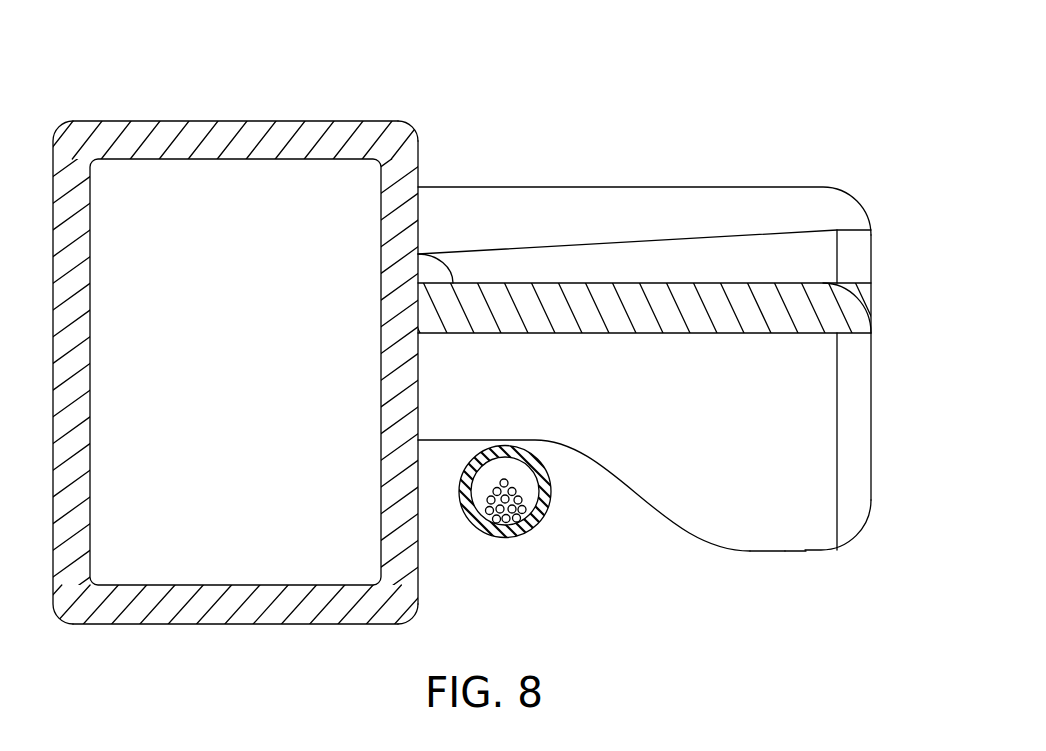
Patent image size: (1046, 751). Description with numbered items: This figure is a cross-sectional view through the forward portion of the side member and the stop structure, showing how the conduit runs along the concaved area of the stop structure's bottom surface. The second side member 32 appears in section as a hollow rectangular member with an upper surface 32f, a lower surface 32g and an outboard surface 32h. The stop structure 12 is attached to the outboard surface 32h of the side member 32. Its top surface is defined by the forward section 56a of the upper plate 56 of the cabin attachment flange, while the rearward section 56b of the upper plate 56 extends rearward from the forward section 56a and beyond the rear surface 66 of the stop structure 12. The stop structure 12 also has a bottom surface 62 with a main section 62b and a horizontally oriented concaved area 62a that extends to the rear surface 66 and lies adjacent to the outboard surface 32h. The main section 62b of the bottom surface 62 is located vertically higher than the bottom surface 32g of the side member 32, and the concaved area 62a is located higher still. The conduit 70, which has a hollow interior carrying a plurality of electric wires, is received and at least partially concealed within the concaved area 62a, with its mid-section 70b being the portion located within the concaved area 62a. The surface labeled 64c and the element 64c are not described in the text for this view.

The stop structure 12 is at (775, 183).
The second side member 32 is at (147, 119).
The upper surface 32f is at (305, 121).
The lower surface 32g is at (208, 624).
The outboard surface 32h is at (420, 168).
The upper plate 56 is at (811, 311).
The forward section 56a is at (592, 208).
The rearward section 56b is at (728, 282).
The bottom surface 62 is at (765, 553).
The concaved area 62a is at (604, 464).
The main section 62b is at (807, 553).
The end wall 64c is at (873, 387).
The rear surface 66 is at (803, 432).
The conduit 70 is at (471, 532).
The mid-section 70b is at (523, 538).